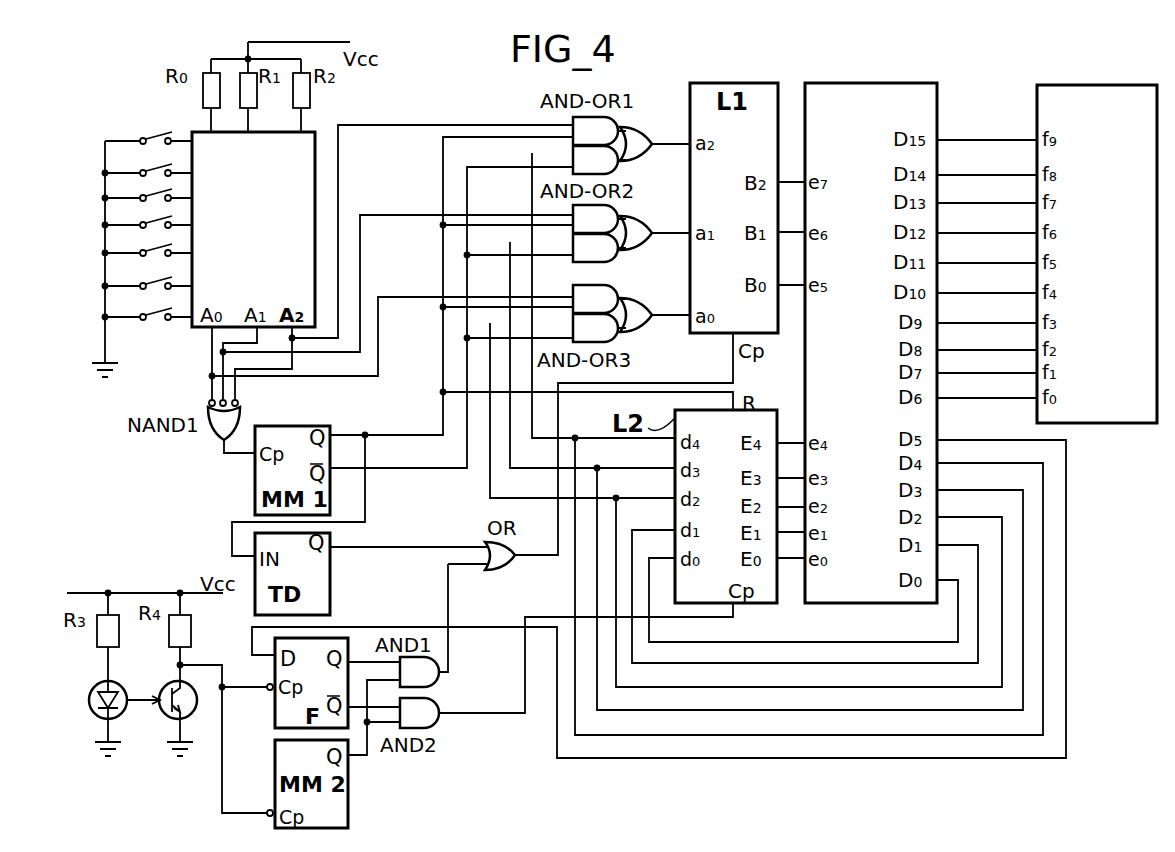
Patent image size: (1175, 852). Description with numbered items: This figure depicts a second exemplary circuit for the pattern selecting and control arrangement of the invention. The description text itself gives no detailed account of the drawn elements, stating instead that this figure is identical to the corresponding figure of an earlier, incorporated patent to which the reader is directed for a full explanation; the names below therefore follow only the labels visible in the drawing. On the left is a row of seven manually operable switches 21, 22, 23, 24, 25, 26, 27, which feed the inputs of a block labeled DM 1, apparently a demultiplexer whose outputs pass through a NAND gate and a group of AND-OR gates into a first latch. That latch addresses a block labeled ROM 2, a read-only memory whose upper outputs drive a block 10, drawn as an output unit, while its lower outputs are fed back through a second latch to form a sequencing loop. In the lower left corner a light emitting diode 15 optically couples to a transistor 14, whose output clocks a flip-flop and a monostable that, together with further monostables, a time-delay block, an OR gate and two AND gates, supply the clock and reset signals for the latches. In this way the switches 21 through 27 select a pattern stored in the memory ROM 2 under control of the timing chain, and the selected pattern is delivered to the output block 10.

The demultiplexer DM1 1 is at (253, 229).
The read only memory ROM2 2 is at (871, 343).
The display unit 10 is at (1097, 254).
The phototransistor 14 is at (169, 687).
The light emitting diode 15 is at (94, 688).
The switch 21 is at (148, 129).
The switch 22 is at (148, 161).
The switch 23 is at (148, 186).
The switch 24 is at (148, 213).
The switch 25 is at (148, 242).
The switch 26 is at (148, 275).
The switch 27 is at (148, 325).